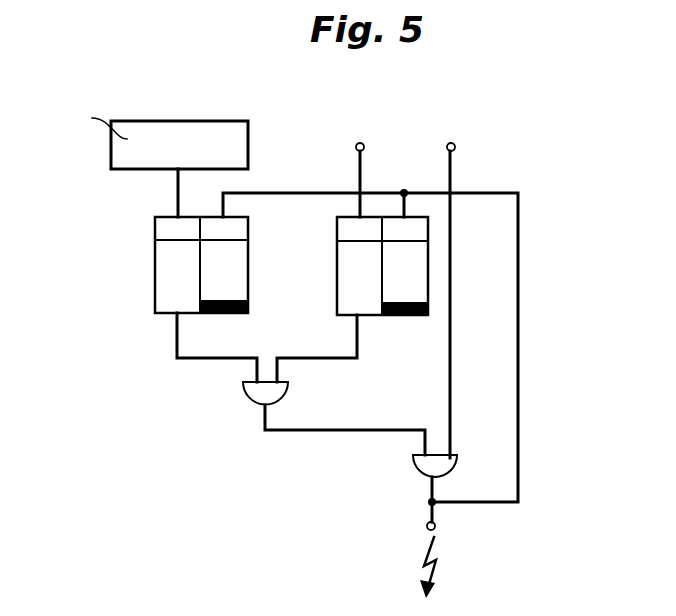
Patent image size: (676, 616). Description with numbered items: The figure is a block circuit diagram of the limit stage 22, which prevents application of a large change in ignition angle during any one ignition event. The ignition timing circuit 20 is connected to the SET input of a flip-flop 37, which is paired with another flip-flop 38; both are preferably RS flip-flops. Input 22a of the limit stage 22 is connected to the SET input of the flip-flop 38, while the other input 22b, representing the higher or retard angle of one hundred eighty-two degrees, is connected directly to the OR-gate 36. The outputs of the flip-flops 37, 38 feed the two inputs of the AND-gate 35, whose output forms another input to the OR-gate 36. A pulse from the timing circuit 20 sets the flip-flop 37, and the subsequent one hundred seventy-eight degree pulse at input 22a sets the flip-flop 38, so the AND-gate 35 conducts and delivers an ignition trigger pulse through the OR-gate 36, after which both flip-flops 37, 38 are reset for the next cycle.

The ignition timing circuit 20 is at (190, 131).
The limit stage 22 is at (482, 178).
The input 22a is at (361, 142).
The other input 22b is at (451, 142).
The AND-gate 35 is at (257, 393).
The OR-gate 36 is at (452, 467).
The flip-flop 37 is at (167, 293).
The flip-flop 38 is at (352, 288).